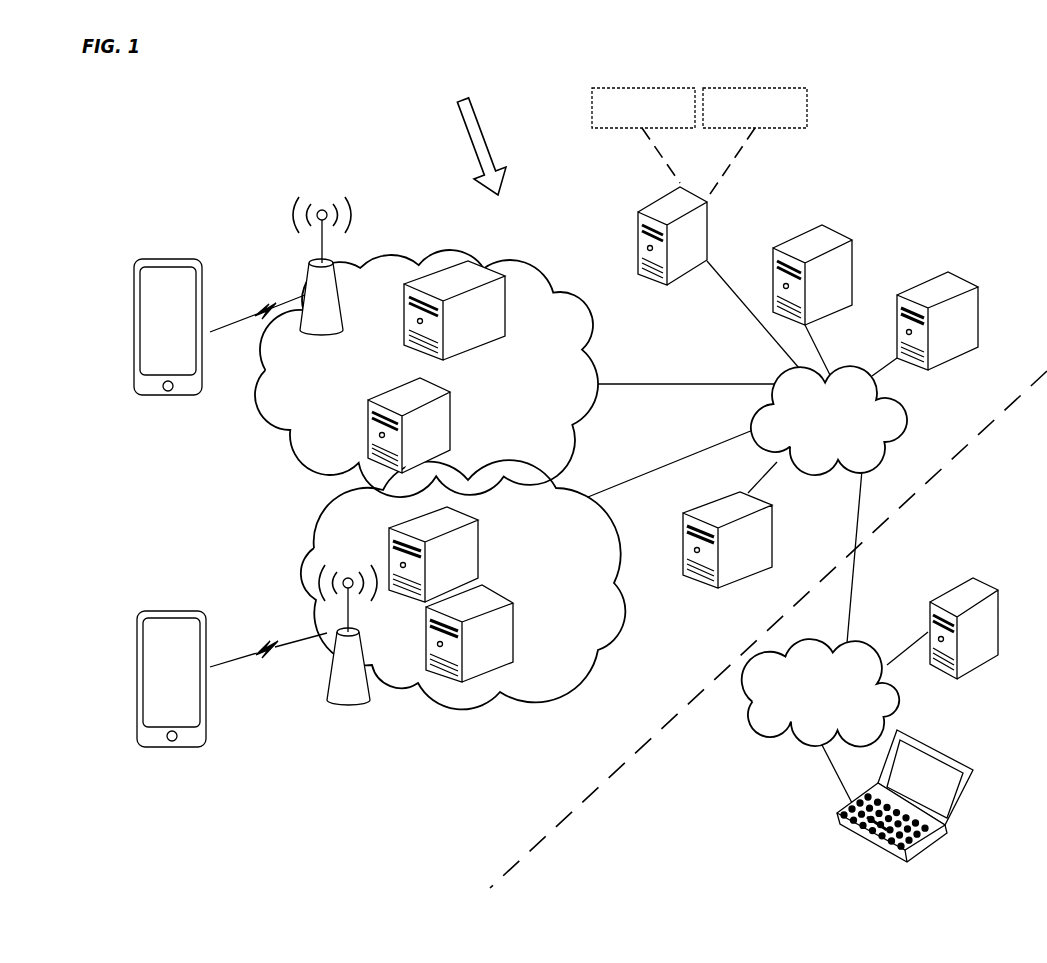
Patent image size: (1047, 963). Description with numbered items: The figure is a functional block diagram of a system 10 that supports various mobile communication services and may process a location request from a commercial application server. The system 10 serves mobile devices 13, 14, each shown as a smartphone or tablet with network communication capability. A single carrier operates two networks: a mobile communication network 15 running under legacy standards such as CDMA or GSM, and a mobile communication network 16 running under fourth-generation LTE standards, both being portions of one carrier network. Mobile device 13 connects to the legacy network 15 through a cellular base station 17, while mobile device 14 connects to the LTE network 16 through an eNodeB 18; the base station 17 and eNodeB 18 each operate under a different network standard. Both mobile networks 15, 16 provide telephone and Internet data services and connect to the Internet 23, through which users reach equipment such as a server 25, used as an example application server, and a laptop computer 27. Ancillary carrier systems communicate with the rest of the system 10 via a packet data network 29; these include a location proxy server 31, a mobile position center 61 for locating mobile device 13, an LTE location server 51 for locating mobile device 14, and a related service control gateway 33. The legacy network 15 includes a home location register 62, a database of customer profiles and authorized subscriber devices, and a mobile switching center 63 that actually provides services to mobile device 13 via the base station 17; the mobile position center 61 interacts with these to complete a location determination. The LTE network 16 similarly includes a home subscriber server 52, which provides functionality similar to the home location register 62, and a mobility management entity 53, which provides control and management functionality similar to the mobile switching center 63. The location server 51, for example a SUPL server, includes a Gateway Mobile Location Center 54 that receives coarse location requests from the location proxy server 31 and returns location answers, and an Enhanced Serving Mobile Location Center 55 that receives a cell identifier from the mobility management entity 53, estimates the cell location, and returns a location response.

The system 10 is at (476, 134).
The mobile device 13 is at (137, 669).
The mobile device 14 is at (133, 305).
The mobile communication network 15 is at (488, 696).
The mobile communication network 16 is at (390, 248).
The cellular base station 17 is at (372, 697).
The eNodeB 18 is at (300, 284).
The Internet 23 is at (765, 736).
The server 25 is at (930, 603).
The laptop computer 27 is at (867, 847).
The packet data network 29 is at (905, 433).
The location proxy server 31 is at (853, 255).
The service control gateway 33 is at (978, 300).
The 4G location server 51 is at (710, 225).
The home subscriber server 52 is at (452, 440).
The mobility management entity 53 is at (510, 315).
The Gateway Mobile Location Center 54 is at (643, 87).
The Enhanced Serving Mobile Location Center 55 is at (760, 87).
The mobile position center 61 is at (772, 530).
The home location register 62 is at (513, 640).
The mobile switching center 63 is at (478, 535).